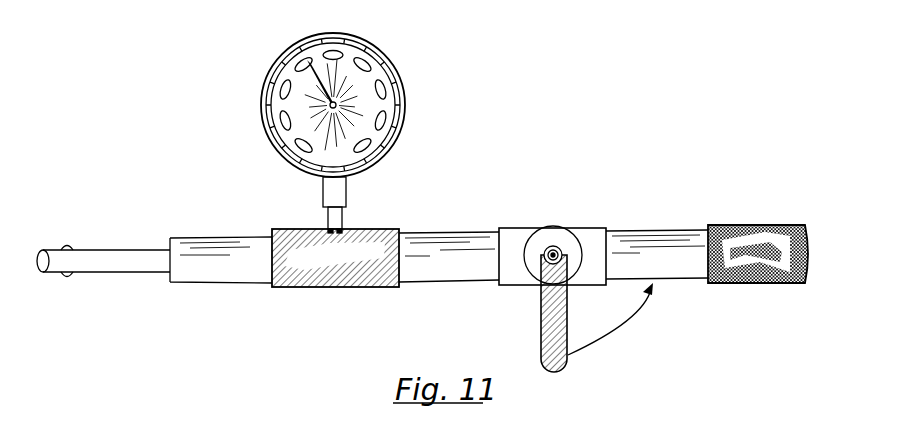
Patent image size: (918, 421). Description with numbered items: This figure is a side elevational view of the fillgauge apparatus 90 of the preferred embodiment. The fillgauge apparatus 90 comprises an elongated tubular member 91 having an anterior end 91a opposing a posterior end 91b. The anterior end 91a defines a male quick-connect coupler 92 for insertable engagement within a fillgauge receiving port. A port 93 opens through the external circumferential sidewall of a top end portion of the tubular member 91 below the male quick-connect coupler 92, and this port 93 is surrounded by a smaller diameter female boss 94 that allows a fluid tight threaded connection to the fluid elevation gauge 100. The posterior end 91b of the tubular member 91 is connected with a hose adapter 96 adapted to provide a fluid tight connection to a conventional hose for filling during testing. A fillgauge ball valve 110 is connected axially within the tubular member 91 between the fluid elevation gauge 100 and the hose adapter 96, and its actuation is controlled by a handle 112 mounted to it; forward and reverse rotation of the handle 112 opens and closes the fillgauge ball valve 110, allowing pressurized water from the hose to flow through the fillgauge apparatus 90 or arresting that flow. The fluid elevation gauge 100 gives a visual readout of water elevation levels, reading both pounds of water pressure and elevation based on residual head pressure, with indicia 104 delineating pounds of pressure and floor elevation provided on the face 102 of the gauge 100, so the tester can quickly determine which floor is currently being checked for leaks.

The fillgauge apparatus 90 is at (484, 160).
The elongated tubular member 91 is at (452, 282).
The anterior end 91a is at (170, 279).
The posterior end 91b is at (678, 230).
The male quick-connect coupler 92 is at (109, 248).
The port 93 is at (348, 232).
The female boss 94 is at (327, 228).
The hose adapter 96 is at (772, 225).
The fluid elevation gauge 100 is at (419, 55).
The face 102 is at (370, 132).
The indicia 104 is at (290, 96).
The fillgauge ball valve 110 is at (575, 228).
The handle 112 is at (542, 322).